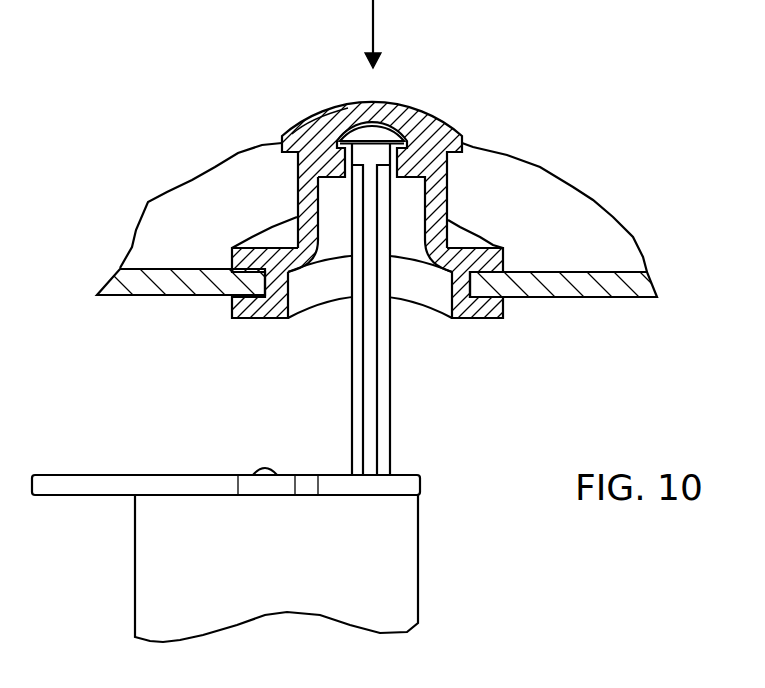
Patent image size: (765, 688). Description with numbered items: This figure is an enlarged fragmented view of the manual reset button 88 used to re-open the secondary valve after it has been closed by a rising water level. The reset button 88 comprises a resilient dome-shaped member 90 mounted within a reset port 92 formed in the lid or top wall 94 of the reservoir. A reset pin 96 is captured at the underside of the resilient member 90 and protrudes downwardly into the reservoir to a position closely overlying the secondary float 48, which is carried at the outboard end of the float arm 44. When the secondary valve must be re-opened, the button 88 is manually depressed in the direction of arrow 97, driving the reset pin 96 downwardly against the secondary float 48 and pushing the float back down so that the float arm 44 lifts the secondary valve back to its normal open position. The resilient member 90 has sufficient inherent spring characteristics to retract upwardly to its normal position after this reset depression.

The float arm 44 is at (124, 474).
The secondary float 48 is at (403, 557).
The reset button 88 is at (420, 85).
The resilient dome-shaped member 90 is at (462, 144).
The reset port 92 is at (272, 317).
The top wall 94 is at (600, 236).
The reset pin 96 is at (377, 400).
The arrow 97 is at (373, 28).